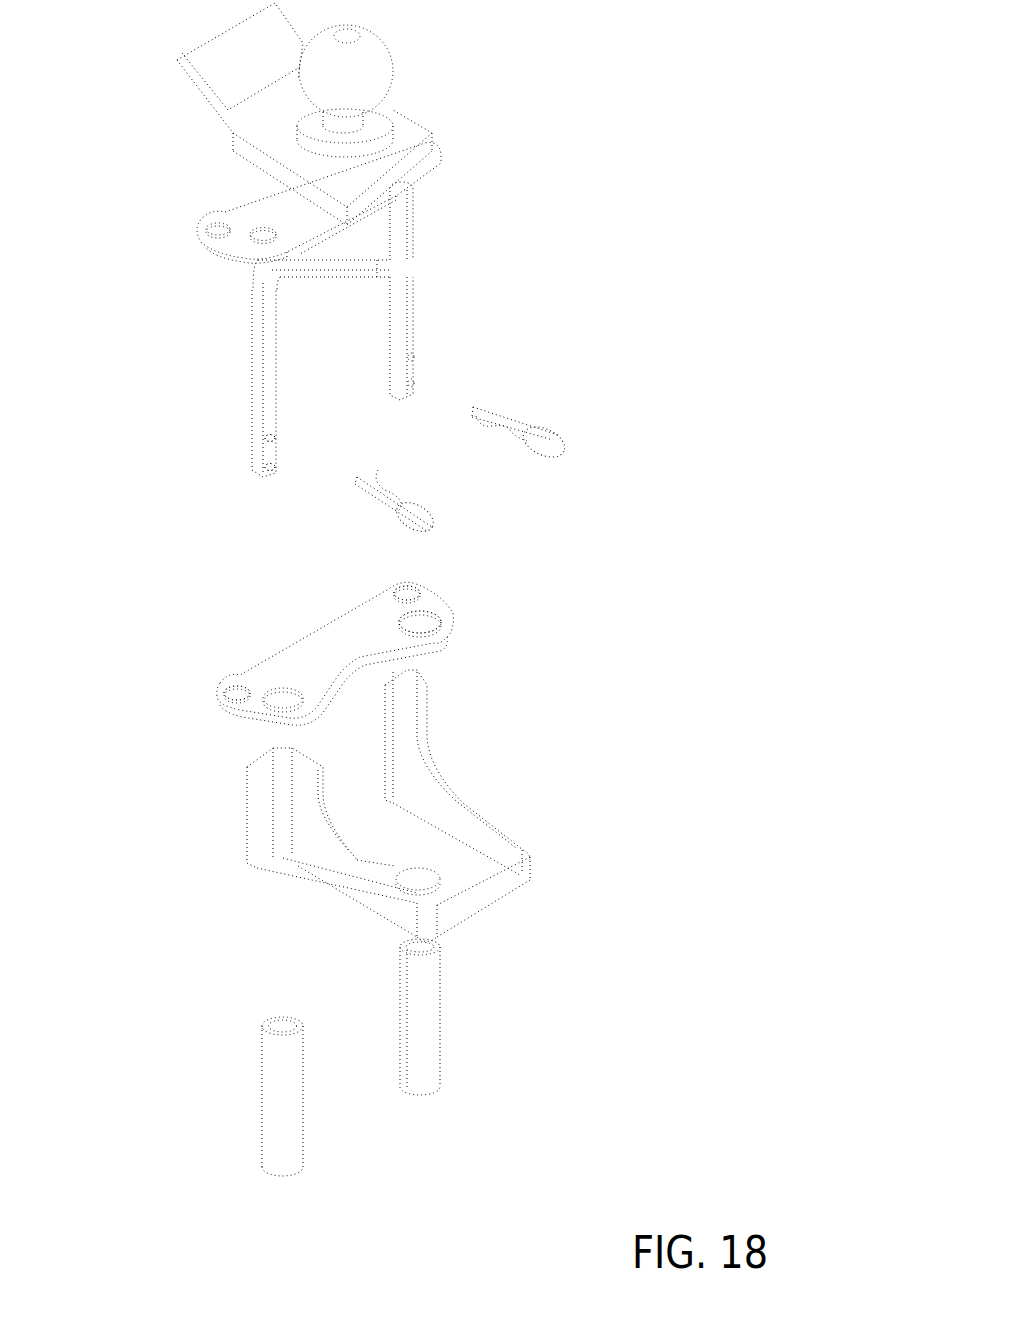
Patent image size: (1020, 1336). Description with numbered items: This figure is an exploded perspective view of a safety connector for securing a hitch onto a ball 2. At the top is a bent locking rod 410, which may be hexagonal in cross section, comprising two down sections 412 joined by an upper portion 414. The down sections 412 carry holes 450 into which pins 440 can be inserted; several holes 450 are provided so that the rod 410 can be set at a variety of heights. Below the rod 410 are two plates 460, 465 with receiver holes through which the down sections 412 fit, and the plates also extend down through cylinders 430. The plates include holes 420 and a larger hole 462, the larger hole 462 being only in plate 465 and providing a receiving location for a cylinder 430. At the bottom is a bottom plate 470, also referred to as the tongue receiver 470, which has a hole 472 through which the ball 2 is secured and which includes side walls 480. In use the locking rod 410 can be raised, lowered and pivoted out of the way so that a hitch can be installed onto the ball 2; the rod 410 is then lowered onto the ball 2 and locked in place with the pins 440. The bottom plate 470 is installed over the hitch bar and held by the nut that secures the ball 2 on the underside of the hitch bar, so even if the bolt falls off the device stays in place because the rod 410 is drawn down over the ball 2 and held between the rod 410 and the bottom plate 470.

The ball 2 is at (357, 63).
The plate 460 is at (267, 215).
The locking rod 410 is at (332, 273).
The down sections 412 is at (407, 303).
The upper portion 414 is at (407, 238).
The holes 450 is at (272, 445).
The pins 440 is at (567, 452).
The plate 465 is at (303, 662).
The holes 420 is at (407, 594).
The larger hole 462 is at (418, 622).
The bottom plate 470 is at (435, 834).
The side walls 480 is at (503, 840).
The hole 472 is at (418, 882).
The cylinders 430 is at (423, 1048).